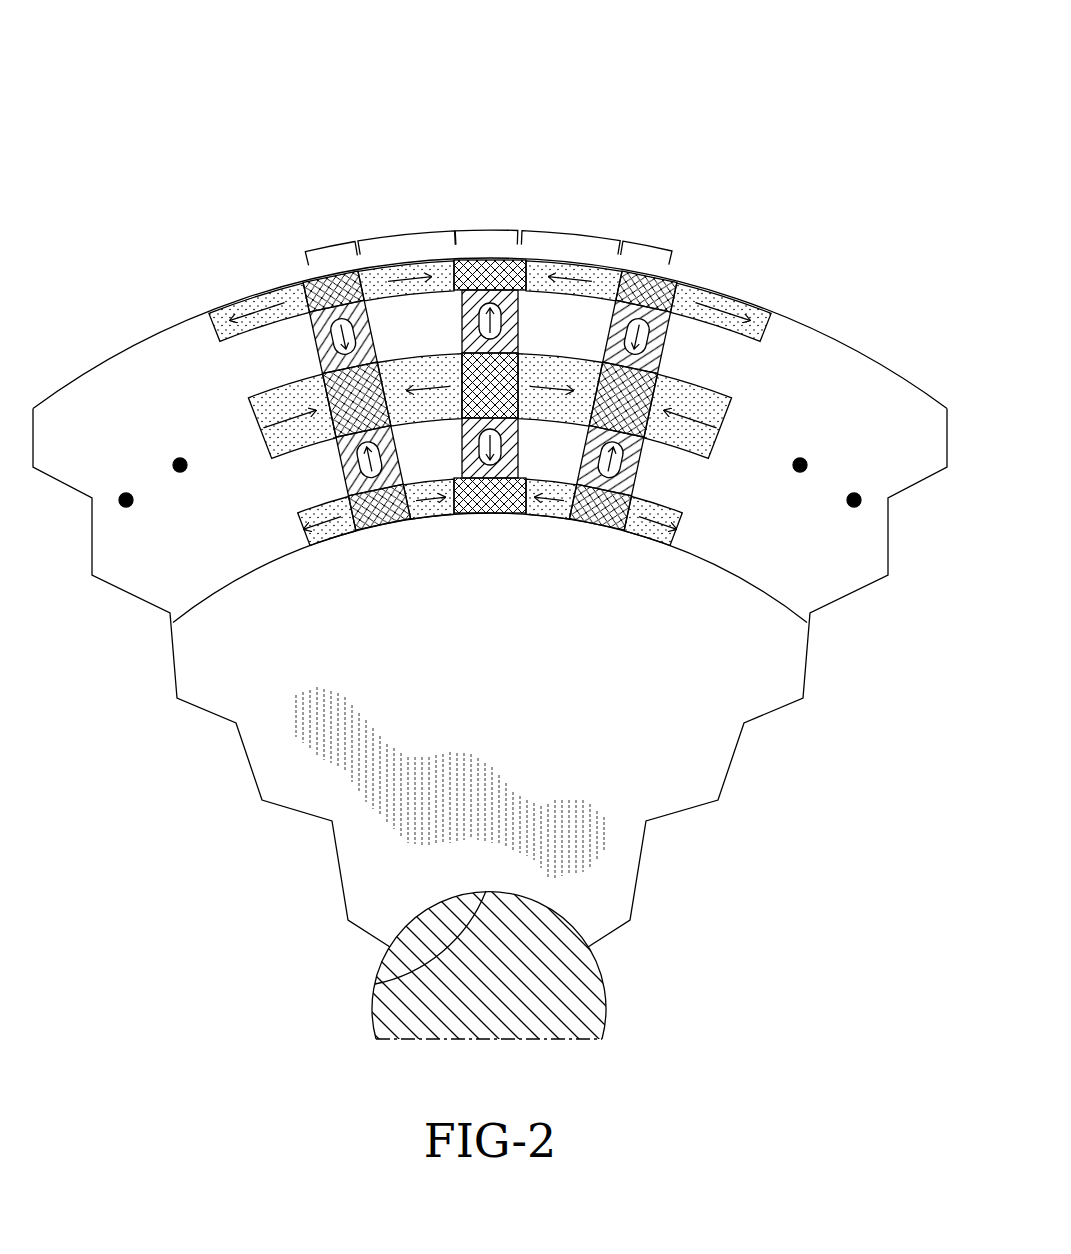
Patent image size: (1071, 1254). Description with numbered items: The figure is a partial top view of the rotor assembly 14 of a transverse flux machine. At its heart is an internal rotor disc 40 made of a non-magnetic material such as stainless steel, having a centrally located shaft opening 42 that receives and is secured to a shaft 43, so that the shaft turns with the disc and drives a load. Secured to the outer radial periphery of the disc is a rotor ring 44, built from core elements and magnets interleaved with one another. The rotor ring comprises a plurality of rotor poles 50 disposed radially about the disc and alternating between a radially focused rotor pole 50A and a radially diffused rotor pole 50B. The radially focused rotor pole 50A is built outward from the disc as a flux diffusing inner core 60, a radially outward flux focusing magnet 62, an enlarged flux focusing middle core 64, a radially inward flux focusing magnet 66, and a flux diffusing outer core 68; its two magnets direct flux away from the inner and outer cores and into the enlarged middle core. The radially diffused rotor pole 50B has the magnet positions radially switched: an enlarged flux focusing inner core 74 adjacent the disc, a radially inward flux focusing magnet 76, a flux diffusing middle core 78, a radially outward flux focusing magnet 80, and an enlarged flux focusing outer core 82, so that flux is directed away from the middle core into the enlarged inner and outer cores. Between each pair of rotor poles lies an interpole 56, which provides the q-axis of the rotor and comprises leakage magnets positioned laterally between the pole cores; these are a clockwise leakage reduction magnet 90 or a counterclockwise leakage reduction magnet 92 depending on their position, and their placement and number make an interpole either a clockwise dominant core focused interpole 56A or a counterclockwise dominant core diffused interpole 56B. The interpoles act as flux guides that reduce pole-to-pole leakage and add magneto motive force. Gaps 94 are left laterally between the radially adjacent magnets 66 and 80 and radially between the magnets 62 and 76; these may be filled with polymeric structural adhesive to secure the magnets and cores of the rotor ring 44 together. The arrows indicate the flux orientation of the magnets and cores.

The rotor assembly 14 is at (233, 118).
The internal rotor disc 40 is at (686, 734).
The shaft opening 42 is at (376, 984).
The shaft 43 is at (604, 977).
The rotor ring 44 is at (876, 343).
The rotor poles 50 is at (687, 221).
The radially focused rotor pole 50A is at (322, 228).
The radially diffused rotor pole 50B is at (494, 215).
The interpole 56 is at (625, 140).
The core focused interpole 56A is at (404, 221).
The core diffused interpole 56B is at (578, 215).
The flux diffusing inner core 60 is at (377, 513).
The radially outward flux focusing magnet 62 is at (353, 468).
The enlarged flux focusing middle core 64 is at (327, 383).
The radially inward flux focusing magnet 66 is at (323, 323).
The flux diffusing outer core 68 is at (345, 274).
The enlarged flux focusing inner core 74 is at (477, 470).
The radially inward flux focusing magnet 76 is at (487, 497).
The flux diffusing middle core 78 is at (500, 385).
The radially outward flux focusing magnet 80 is at (510, 323).
The enlarged flux focusing outer core 82 is at (483, 272).
The clockwise leakage reduction magnet 90 is at (402, 298).
The counterclockwise leakage reduction magnet 92 is at (580, 300).
The gaps 94 is at (397, 313).